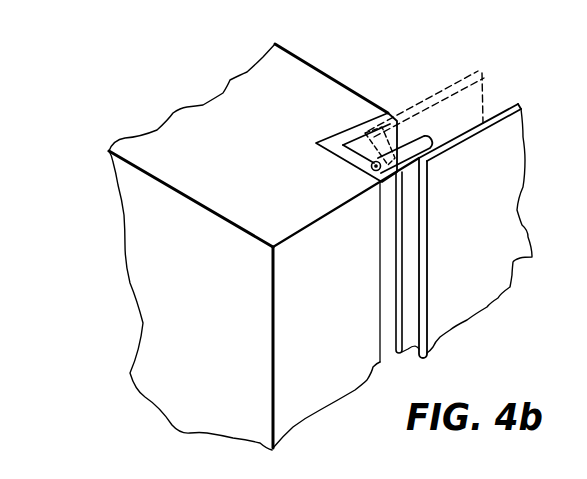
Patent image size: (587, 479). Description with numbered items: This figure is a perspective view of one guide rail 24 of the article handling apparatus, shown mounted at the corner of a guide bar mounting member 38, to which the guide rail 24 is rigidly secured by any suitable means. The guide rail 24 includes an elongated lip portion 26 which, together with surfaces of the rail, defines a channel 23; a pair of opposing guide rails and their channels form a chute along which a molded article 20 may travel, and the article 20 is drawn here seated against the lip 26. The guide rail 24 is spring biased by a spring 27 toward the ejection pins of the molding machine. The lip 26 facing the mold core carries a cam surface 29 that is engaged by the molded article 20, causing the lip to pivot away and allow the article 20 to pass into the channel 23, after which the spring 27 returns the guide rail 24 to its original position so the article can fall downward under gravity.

The guide bar mounting member 38 is at (137, 203).
The guide rail 24 is at (381, 112).
The channel 23 is at (363, 138).
The spring 27 is at (371, 166).
The cam surface 29 is at (428, 146).
The molded article 20 is at (490, 199).
The lip portion 26 is at (412, 273).